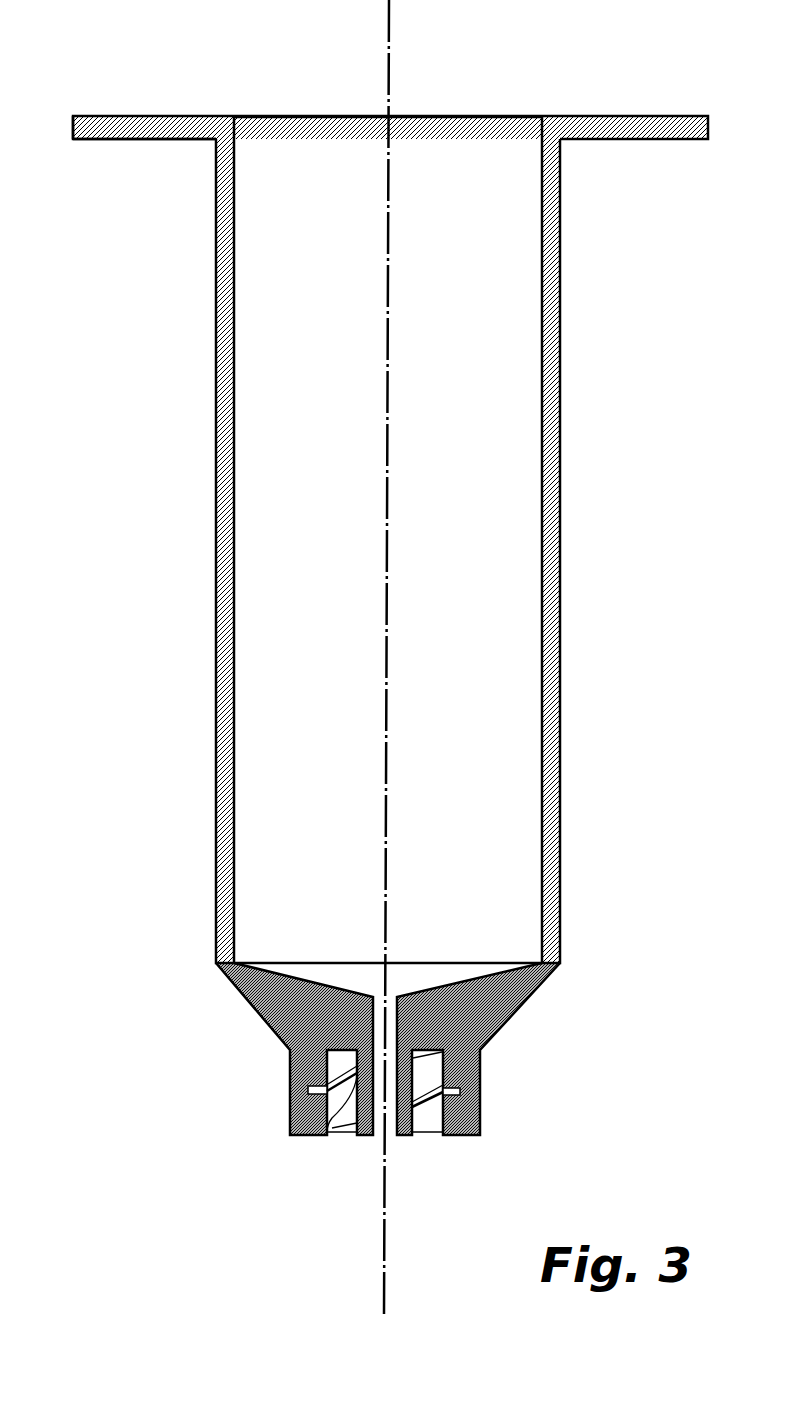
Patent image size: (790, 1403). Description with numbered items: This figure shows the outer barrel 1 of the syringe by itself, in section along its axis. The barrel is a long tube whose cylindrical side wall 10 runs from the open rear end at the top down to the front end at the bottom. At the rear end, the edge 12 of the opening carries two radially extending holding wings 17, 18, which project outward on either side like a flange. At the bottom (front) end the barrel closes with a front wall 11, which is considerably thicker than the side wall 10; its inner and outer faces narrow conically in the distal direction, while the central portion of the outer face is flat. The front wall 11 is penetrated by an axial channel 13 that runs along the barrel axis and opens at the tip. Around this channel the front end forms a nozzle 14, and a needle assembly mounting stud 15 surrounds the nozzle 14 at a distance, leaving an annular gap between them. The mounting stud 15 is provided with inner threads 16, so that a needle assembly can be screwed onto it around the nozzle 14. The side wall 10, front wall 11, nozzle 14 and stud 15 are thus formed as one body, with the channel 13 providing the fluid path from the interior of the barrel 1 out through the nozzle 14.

The outer barrel 1 is at (375, 658).
The outer barrel side wall 10 is at (561, 443).
The front wall 11 is at (518, 1012).
The edge 12 is at (430, 118).
The axial channel 13 is at (382, 1135).
The nozzle 14 is at (373, 1135).
The needle assembly mounting stud 15 is at (482, 1110).
The inner threads 16 is at (327, 1126).
The holding wing 17 is at (637, 116).
The holding wing 18 is at (160, 138).